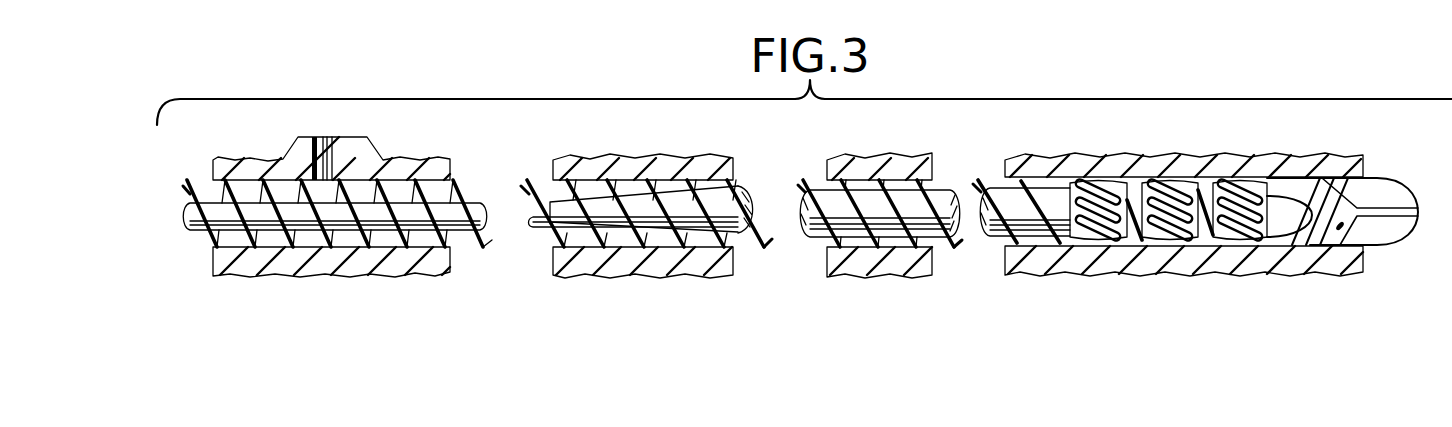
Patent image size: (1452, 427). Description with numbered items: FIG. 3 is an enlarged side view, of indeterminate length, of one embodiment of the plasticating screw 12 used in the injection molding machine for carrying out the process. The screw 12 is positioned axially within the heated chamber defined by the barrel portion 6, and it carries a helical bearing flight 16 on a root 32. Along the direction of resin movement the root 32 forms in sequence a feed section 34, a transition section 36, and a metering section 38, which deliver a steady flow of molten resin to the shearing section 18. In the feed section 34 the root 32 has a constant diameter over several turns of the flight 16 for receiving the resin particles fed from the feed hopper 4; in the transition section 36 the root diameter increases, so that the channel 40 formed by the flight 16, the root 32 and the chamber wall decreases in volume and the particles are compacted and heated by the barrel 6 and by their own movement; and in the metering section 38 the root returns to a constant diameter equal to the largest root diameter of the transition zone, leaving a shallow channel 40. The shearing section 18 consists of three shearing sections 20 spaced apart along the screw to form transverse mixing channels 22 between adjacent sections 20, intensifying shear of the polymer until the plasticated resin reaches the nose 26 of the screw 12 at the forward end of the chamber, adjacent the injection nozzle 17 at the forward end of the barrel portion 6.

The feed hopper 4 is at (337, 137).
The barrel portion 6 is at (1060, 163).
The plasticating screw 12 is at (198, 233).
The helical bearing flight 16 is at (457, 200).
The injection nozzle 17 is at (1380, 178).
The shearing section 18 is at (1067, 308).
The shearing sections 20 is at (1223, 173).
The transverse mixing channels 22 is at (1207, 227).
The nose 26 is at (1283, 200).
The root 32 is at (278, 172).
The feed section 34 is at (190, 313).
The transition section 36 is at (532, 310).
The metering section 38 is at (805, 308).
The channel 40 is at (587, 190).